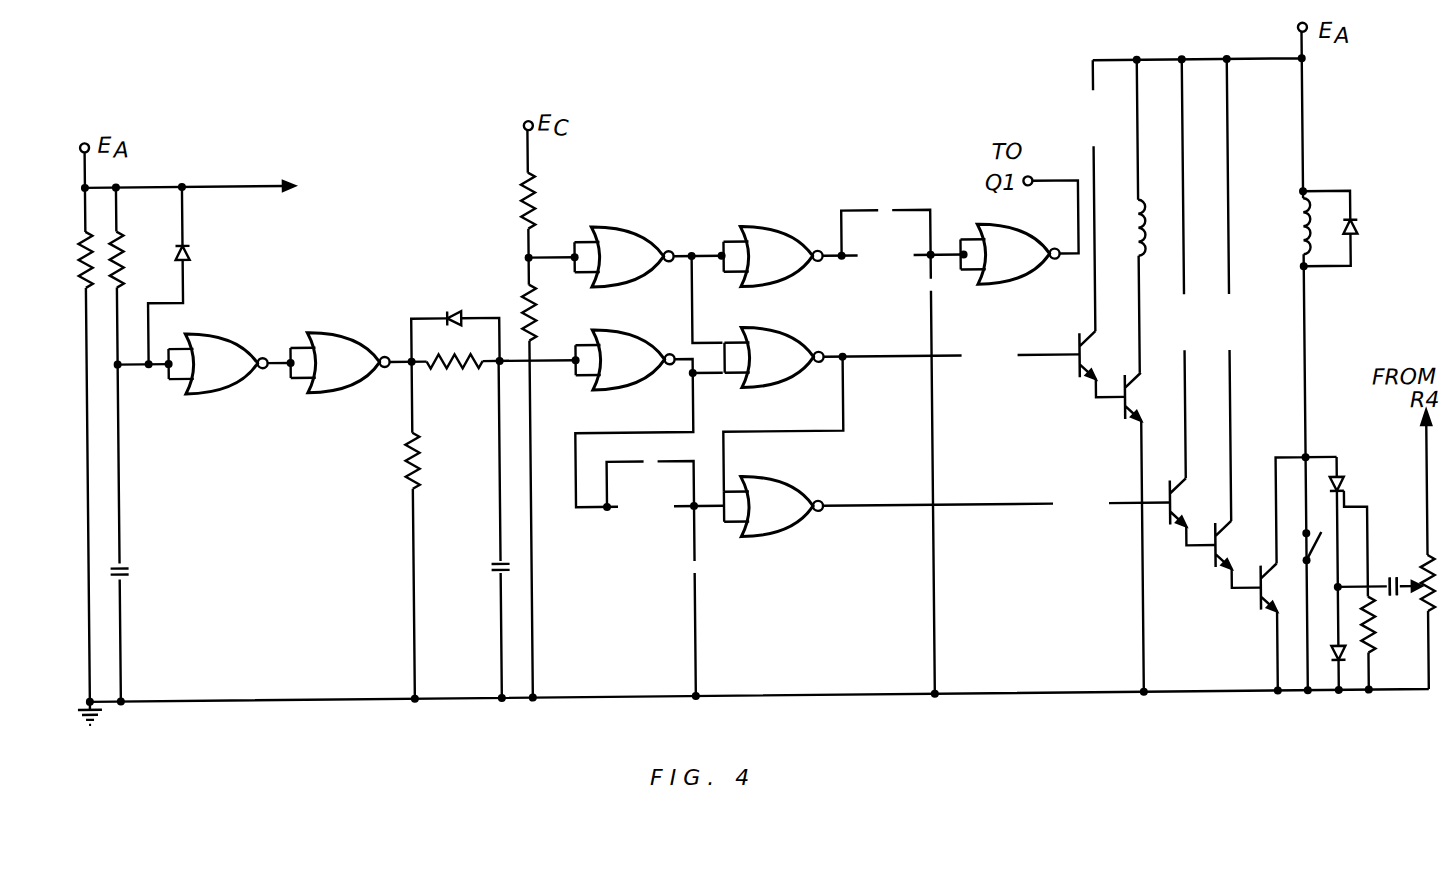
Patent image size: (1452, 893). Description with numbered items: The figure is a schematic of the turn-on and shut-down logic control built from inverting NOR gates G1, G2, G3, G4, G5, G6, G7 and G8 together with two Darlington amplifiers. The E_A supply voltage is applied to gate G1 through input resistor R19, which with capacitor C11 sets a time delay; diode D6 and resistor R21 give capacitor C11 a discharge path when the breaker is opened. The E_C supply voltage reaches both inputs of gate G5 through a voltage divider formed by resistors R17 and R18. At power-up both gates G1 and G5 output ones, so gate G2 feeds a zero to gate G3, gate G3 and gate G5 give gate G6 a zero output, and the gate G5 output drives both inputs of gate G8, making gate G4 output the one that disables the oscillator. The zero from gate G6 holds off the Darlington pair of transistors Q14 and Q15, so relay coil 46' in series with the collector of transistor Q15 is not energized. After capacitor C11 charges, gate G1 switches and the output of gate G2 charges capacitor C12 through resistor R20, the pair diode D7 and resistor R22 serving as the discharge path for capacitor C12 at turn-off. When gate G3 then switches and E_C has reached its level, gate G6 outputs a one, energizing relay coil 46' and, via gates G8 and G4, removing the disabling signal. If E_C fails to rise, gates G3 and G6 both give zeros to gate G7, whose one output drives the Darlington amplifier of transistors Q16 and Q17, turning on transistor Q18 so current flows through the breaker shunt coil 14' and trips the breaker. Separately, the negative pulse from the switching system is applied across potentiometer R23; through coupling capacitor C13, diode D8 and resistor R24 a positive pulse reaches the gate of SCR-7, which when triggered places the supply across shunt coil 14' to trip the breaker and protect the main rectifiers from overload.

The resistor R21 is at (88, 230).
The input resistor R19 is at (121, 258).
The diode D6 is at (192, 249).
The capacitor C11 is at (145, 574).
The NOR gate G1 is at (218, 363).
The NOR gate G2 is at (340, 362).
The diode D7 is at (456, 302).
The resistor R20 is at (455, 373).
The resistor R22 is at (439, 460).
The capacitor C12 is at (474, 570).
The resistor R17 is at (553, 200).
The resistor R18 is at (554, 312).
The NOR gate G5 is at (624, 256).
The NOR gate G3 is at (625, 359).
The NOR gate G8 is at (773, 256).
The NOR gate G6 is at (774, 357).
The NOR gate G7 is at (774, 506).
The NOR gate G4 is at (1010, 254).
The transistor Q14 is at (1106, 355).
The transistor Q15 is at (1152, 396).
The transistor Q16 is at (1198, 502).
The transistor Q17 is at (1243, 545).
The transistor Q18 is at (1289, 587).
The relay coil 46' is at (1160, 227).
The shunt coil of circuit breaker 14' is at (1310, 226).
The silicon controlled rectifier SCR-7 is at (1374, 489).
The coupling capacitor C13 is at (1396, 574).
The potentiometer R23 is at (1408, 591).
The resistor R24 is at (1390, 664).
The diode D8 is at (1343, 662).